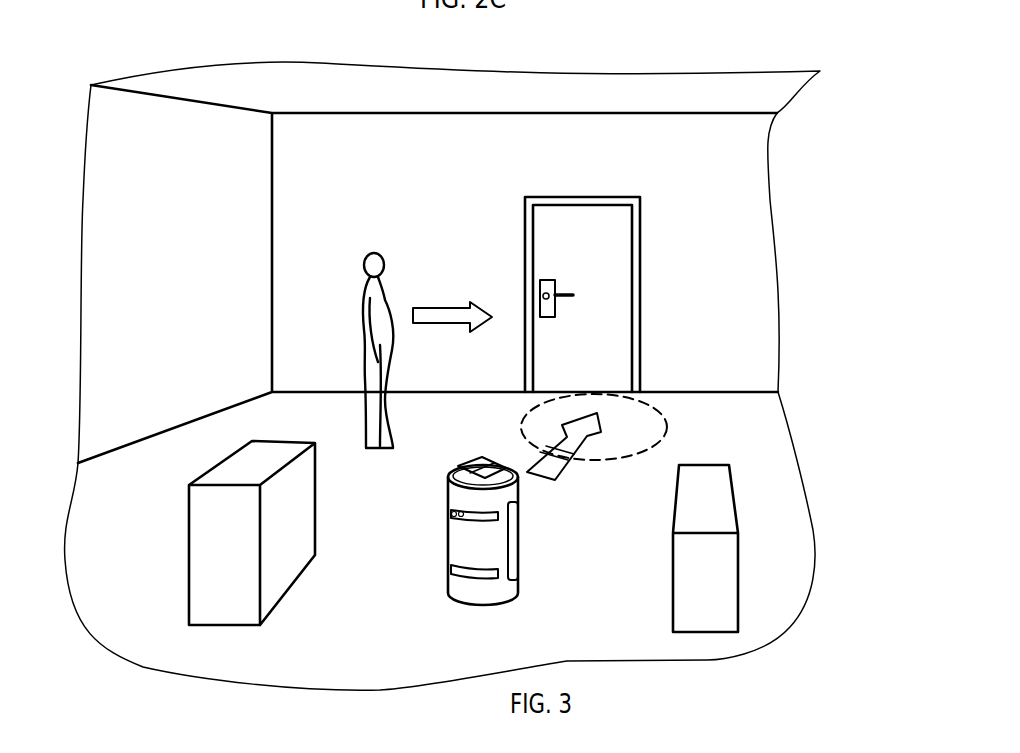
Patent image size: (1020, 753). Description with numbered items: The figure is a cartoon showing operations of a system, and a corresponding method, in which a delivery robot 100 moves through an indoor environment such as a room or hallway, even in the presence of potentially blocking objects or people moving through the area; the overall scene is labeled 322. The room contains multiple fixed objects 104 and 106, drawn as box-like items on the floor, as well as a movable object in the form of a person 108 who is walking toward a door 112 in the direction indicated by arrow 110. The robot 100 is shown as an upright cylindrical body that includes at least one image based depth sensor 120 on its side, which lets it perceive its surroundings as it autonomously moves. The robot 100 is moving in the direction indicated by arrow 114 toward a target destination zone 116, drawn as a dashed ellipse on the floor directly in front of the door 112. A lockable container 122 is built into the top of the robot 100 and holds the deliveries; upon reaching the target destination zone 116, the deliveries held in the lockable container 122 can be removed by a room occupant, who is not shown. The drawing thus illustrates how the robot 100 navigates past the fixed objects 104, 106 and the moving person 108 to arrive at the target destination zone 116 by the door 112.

The environment 322 is at (713, 42).
The delivery robot 100 is at (485, 544).
The fixed object 104 is at (688, 571).
The fixed object 106 is at (302, 520).
The person 108 is at (400, 253).
The arrow 110 is at (445, 317).
The door 112 is at (610, 267).
The arrow 114 is at (540, 457).
The target destination zone 116 is at (650, 405).
The image based depth sensor 120 is at (448, 508).
The lockable container 122 is at (470, 468).